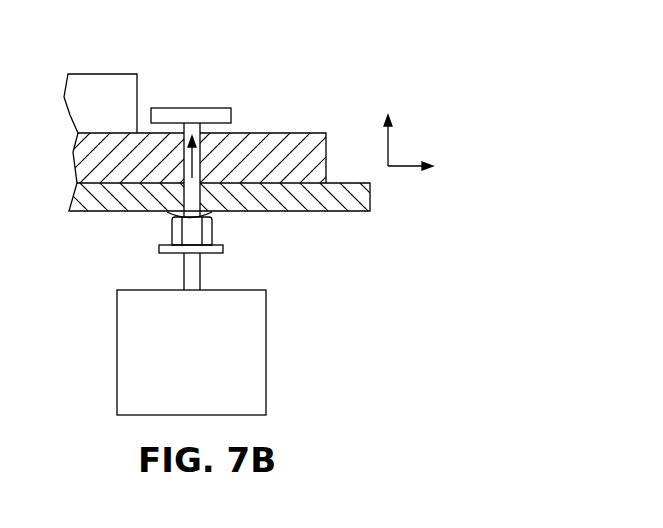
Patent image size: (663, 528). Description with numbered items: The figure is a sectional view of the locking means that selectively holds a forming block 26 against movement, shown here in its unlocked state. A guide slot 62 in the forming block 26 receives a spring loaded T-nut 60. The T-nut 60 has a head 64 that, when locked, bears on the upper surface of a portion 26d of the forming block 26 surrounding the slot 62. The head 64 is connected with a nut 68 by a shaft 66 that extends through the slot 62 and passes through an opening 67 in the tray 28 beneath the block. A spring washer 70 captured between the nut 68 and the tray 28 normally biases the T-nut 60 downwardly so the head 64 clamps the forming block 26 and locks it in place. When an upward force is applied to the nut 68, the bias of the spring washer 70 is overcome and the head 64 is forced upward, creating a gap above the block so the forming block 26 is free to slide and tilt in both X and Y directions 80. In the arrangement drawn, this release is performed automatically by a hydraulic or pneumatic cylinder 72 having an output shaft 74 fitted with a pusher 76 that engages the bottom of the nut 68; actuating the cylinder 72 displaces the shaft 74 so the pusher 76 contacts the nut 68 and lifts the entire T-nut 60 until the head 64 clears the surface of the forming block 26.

The forming block 26 is at (108, 88).
The portion of the forming block 26d is at (277, 131).
The tray 28 is at (357, 197).
The T-nut 60 is at (209, 128).
The guide slot 62 is at (312, 137).
The head 64 is at (177, 115).
The shaft 66 is at (201, 196).
The opening 67 is at (183, 196).
The nut 68 is at (206, 232).
The spring washer 70 is at (170, 215).
The cylinder 72 is at (117, 350).
The output shaft 74 is at (188, 277).
The pusher 76 is at (223, 249).
The X and Y directions 80 is at (412, 112).